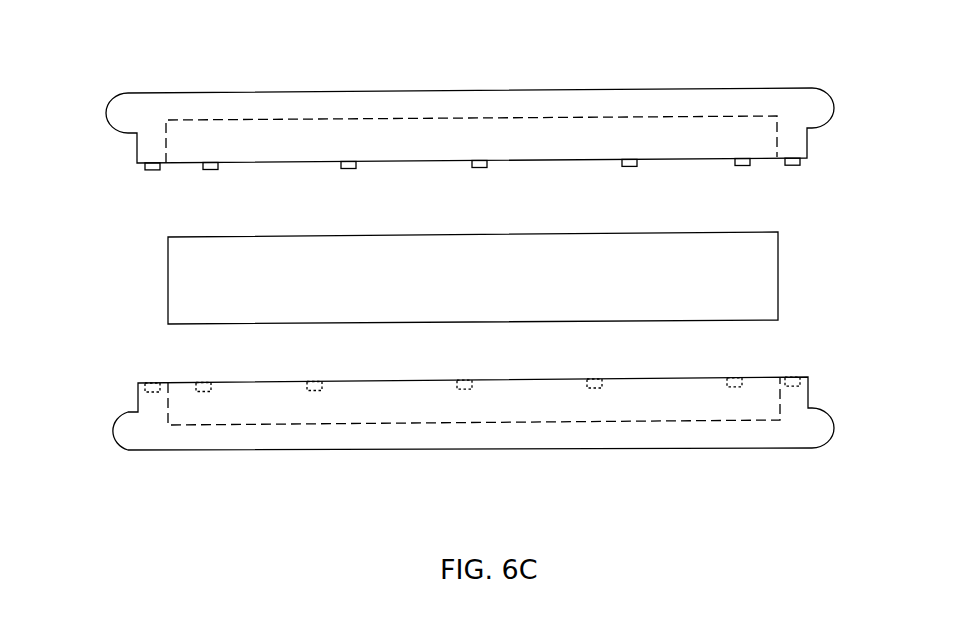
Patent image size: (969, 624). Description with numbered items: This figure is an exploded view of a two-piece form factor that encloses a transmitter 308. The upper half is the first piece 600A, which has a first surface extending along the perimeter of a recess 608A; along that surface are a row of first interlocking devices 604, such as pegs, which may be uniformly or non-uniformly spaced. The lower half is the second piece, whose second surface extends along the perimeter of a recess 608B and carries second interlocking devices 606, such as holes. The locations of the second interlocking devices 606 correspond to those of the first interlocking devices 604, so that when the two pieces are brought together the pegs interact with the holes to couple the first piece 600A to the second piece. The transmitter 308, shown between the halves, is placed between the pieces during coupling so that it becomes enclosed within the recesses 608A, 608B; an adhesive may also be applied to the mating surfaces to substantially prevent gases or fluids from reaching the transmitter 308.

The first piece 600A is at (173, 86).
The first interlocking devices 604 is at (800, 167).
The second interlocking devices 606 is at (808, 377).
The recess 608A is at (410, 182).
The recess 608B is at (388, 361).
The transmitter 308 is at (160, 273).